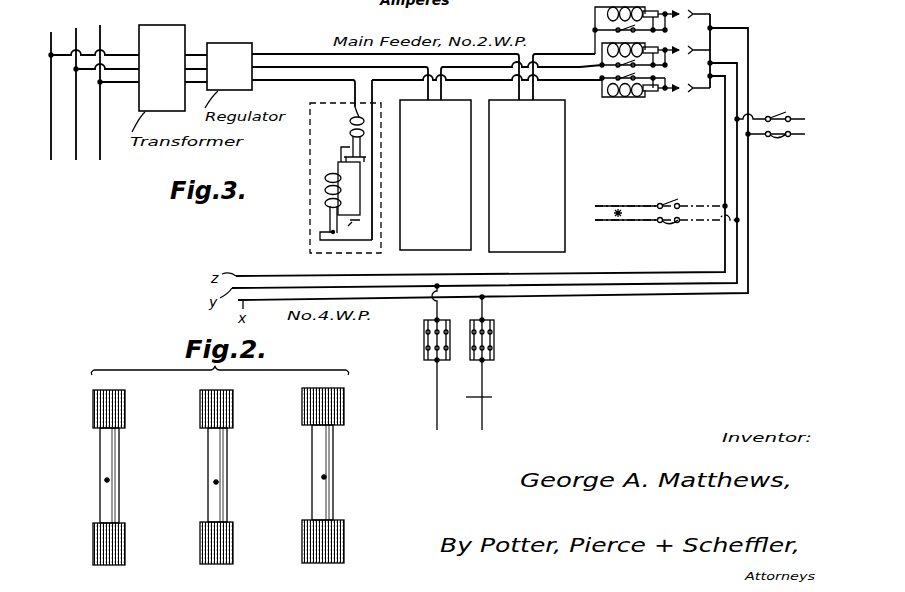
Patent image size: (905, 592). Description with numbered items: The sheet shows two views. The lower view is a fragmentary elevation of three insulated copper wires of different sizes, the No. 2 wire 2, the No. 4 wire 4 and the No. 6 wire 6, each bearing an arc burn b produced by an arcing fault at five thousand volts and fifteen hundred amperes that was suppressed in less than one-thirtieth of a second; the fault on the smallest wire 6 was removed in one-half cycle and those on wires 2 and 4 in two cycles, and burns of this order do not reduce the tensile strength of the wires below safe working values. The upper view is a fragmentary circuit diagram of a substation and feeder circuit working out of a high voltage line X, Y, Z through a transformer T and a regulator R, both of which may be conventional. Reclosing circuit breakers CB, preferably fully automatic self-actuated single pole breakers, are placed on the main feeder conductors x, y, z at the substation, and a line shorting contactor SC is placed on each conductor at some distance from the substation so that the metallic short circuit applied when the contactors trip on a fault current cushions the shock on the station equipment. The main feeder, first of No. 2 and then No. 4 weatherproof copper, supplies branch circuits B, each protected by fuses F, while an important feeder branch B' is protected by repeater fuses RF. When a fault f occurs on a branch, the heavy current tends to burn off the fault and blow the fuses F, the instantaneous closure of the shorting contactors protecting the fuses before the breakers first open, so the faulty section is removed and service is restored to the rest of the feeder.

In FIG. 3, the transformer T is at (178, 30).
In FIG. 3, the regulator R is at (238, 50).
In FIG. 3, the high voltage line X is at (48, 106).
In FIG. 3, the high voltage line Y is at (75, 104).
In FIG. 3, the high voltage line Z is at (99, 103).
In FIG. 3, the main feeder conductor x is at (288, 52).
In FIG. 3, the main feeder conductor y is at (296, 64).
In FIG. 3, the main feeder conductor z is at (292, 84).
In FIG. 3, the reclosing circuit breaker CB is at (310, 166).
In FIG. 3, the line shorting contactor SC is at (595, 43).
In FIG. 3, the fuse F is at (786, 118).
In FIG. 3, the branch circuit B is at (723, 170).
In FIG. 3, the fault f is at (627, 224).
In FIG. 3, the repeater fuse RF is at (424, 336).
In FIG. 3, the important feeder branch B' is at (488, 398).
In FIG. 2, the No. 2 insulated copper wire 2 is at (333, 446).
In FIG. 2, the No. 4 insulated copper wire 4 is at (227, 450).
In FIG. 2, the No. 6 insulated copper wire 6 is at (119, 446).
In FIG. 2, the arc burn b is at (110, 480).